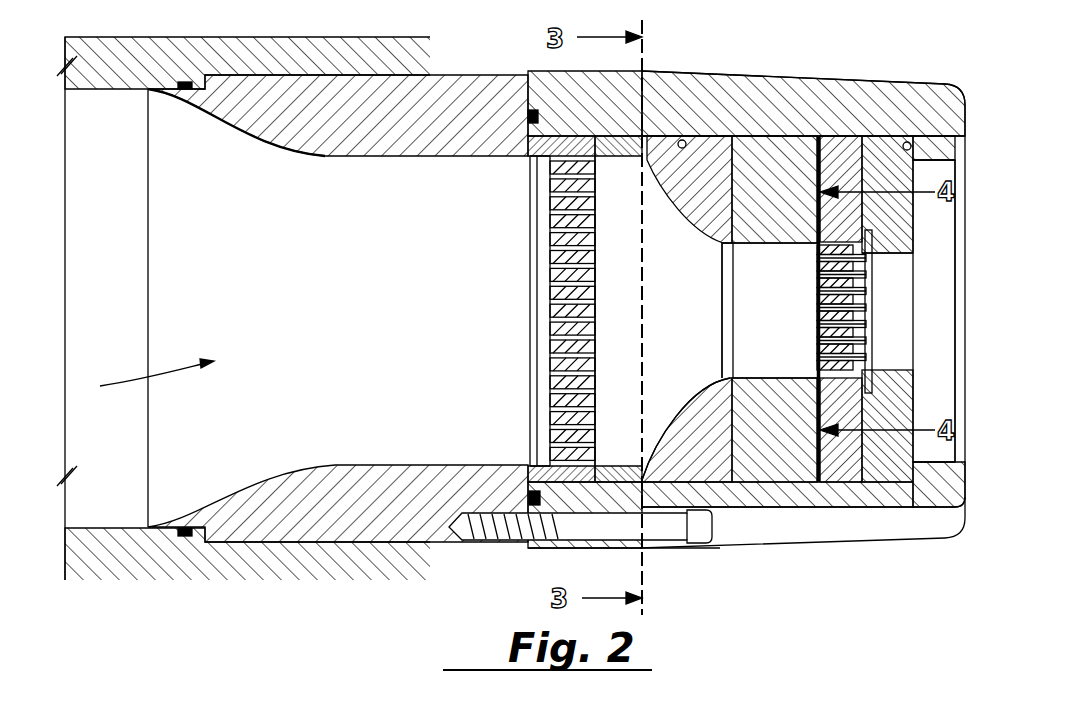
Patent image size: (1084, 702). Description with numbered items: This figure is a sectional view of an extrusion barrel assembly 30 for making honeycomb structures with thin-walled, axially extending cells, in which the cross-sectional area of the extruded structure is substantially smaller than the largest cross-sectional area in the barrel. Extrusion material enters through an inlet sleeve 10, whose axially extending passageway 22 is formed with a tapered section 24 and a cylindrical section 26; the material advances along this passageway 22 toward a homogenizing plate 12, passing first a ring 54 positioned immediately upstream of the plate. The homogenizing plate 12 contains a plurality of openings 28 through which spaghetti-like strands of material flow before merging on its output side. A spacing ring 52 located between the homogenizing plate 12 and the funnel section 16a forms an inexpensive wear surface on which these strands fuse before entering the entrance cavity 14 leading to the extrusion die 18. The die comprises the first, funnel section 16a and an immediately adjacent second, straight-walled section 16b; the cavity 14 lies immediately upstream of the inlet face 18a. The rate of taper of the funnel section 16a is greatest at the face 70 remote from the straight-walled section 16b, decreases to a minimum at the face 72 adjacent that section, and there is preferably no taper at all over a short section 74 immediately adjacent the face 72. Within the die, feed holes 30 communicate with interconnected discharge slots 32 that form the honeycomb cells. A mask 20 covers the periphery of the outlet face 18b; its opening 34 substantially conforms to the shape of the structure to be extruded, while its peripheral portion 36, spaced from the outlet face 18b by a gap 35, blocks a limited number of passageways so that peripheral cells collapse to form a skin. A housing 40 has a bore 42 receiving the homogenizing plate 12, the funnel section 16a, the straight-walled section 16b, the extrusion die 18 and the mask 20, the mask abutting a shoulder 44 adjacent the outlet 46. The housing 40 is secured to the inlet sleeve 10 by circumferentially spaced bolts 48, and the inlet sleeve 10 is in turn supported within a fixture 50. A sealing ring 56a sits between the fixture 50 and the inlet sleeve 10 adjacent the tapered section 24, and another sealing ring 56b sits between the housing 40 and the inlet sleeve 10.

The inlet sleeve 10 is at (345, 97).
The homogenizing plate 12 is at (583, 140).
The entrance cavity 14 is at (698, 336).
The funnel section 16a is at (705, 452).
The straight-walled section 16b is at (785, 452).
The extrusion die 18 is at (843, 148).
The inlet face 18a is at (817, 197).
The outlet face 18b is at (870, 455).
The mask 20 is at (880, 155).
The passageway 22 is at (144, 380).
The tapered section 24 is at (236, 133).
The cylindrical section 26 is at (388, 157).
The openings 28 is at (560, 308).
The feed holes 30 is at (818, 282).
The discharge slots 32 is at (866, 313).
The opening 34 is at (895, 348).
The gap 35 is at (875, 380).
The peripheral portion 36 is at (893, 245).
The housing 40 is at (735, 74).
The bore 42 is at (690, 140).
The shoulder 44 is at (906, 142).
The outlet 46 is at (937, 168).
The bolts 48 is at (665, 527).
The fixture 50 is at (332, 565).
The spacing ring 52 is at (617, 483).
The ring 54 is at (536, 160).
The sealing ring 56a is at (187, 538).
The sealing ring 56b is at (528, 114).
The face 70 is at (640, 246).
The face 72 is at (728, 262).
The short section 74 is at (718, 375).